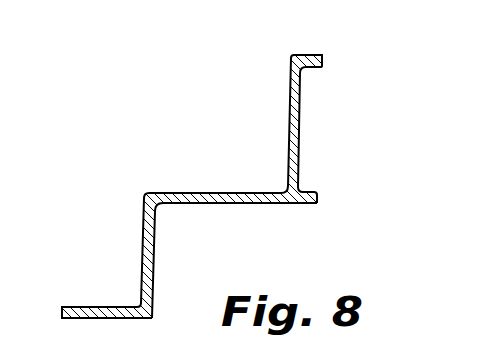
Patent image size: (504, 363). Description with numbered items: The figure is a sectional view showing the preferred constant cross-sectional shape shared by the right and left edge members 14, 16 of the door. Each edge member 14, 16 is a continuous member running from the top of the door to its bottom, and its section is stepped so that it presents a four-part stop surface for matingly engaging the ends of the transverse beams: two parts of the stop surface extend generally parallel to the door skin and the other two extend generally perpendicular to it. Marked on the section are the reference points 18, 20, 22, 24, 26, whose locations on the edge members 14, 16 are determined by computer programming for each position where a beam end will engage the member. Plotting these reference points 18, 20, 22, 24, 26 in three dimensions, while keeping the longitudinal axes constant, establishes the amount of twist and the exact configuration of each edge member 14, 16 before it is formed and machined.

The right edge member 14 is at (252, 181).
The left edge member 16 is at (252, 181).
The reference point 18 is at (58, 321).
The reference point 20 is at (156, 319).
The reference point 22 is at (148, 199).
The reference point 24 is at (317, 207).
The reference point 26 is at (323, 48).